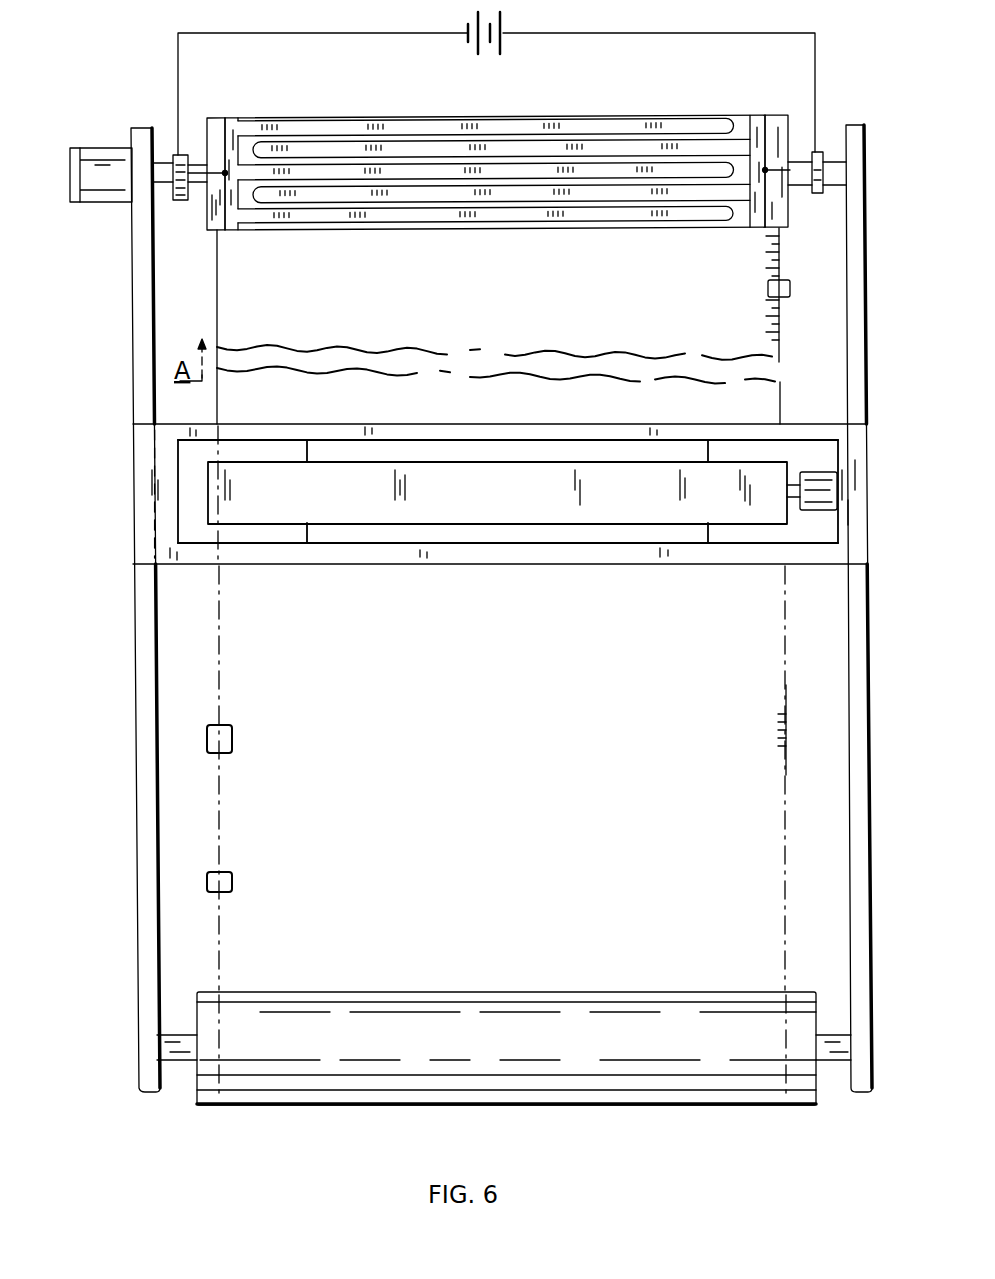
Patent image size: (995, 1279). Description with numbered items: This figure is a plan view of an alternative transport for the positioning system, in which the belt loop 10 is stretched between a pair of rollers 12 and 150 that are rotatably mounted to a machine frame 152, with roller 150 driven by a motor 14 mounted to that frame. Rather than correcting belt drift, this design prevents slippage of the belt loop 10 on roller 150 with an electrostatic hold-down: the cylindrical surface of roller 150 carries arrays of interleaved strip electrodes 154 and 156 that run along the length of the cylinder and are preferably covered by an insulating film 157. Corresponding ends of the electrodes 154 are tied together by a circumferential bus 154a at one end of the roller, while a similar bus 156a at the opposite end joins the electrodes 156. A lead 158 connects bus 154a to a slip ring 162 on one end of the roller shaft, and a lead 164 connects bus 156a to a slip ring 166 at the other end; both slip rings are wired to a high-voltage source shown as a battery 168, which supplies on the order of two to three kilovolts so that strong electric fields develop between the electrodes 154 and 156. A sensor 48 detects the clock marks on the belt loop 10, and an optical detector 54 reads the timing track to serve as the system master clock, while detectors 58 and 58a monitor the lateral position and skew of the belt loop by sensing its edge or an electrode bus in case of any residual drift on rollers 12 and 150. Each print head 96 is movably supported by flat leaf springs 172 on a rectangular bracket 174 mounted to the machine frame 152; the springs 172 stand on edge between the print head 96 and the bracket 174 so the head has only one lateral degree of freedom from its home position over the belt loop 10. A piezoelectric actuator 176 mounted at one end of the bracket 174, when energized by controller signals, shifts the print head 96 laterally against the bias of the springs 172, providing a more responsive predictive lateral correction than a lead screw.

The belt loop 10 is at (217, 318).
The roller 12 is at (338, 1028).
The motor 14 is at (103, 148).
The sensor 48 is at (790, 291).
The optical detector 54 is at (766, 322).
The detector 58 is at (232, 882).
The detector 58a is at (232, 727).
The print head 96 is at (497, 493).
The roller 150 is at (212, 118).
The machine frame 152 is at (131, 368).
The strip electrodes 154 is at (297, 183).
The circumferential bus 154a is at (233, 230).
The strip electrodes 156 is at (677, 203).
The bus 156a is at (755, 227).
The insulating film 157 is at (598, 117).
The lead 158 is at (196, 186).
The slip ring 162 is at (178, 157).
The lead 164 is at (796, 186).
The slip ring 166 is at (818, 152).
The battery 168 is at (489, 50).
The flat leaf springs 172 is at (307, 447).
The rectangular bracket 174 is at (535, 566).
The piezoelectric actuator 176 is at (825, 490).